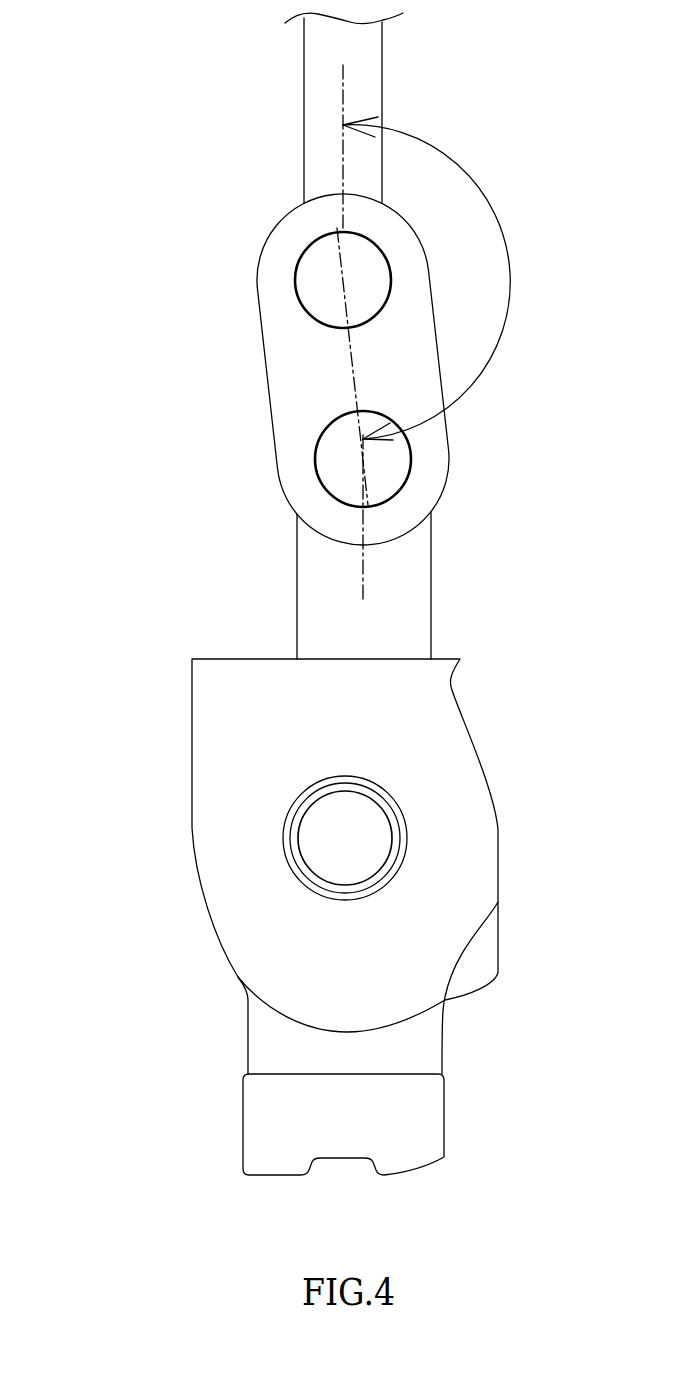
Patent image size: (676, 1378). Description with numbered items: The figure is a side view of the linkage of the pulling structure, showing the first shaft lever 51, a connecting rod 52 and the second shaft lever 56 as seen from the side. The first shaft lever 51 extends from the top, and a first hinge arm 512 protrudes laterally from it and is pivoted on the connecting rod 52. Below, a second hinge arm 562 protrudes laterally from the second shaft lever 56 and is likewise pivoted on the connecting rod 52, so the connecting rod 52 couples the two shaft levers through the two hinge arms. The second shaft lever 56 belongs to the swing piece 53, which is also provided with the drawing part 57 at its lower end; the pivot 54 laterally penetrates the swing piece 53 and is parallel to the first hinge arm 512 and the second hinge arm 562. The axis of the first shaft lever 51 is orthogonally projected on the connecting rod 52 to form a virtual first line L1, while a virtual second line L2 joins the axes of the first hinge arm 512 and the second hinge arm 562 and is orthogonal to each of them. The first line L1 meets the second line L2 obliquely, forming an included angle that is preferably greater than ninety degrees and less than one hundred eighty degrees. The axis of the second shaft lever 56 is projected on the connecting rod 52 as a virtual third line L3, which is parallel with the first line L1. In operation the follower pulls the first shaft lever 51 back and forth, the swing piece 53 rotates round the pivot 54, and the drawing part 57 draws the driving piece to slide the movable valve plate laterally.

The first shaft lever 51 is at (304, 111).
The first hinge arm 512 is at (318, 280).
The connecting rod 52 is at (268, 383).
The second hinge arm 562 is at (340, 463).
The second shaft lever 56 is at (297, 587).
The swing piece 53 is at (192, 792).
The pivot 54 is at (335, 842).
The drawing part 57 is at (243, 1126).
The first line L1 is at (343, 83).
The second line L2 is at (350, 370).
The third line L3 is at (363, 587).